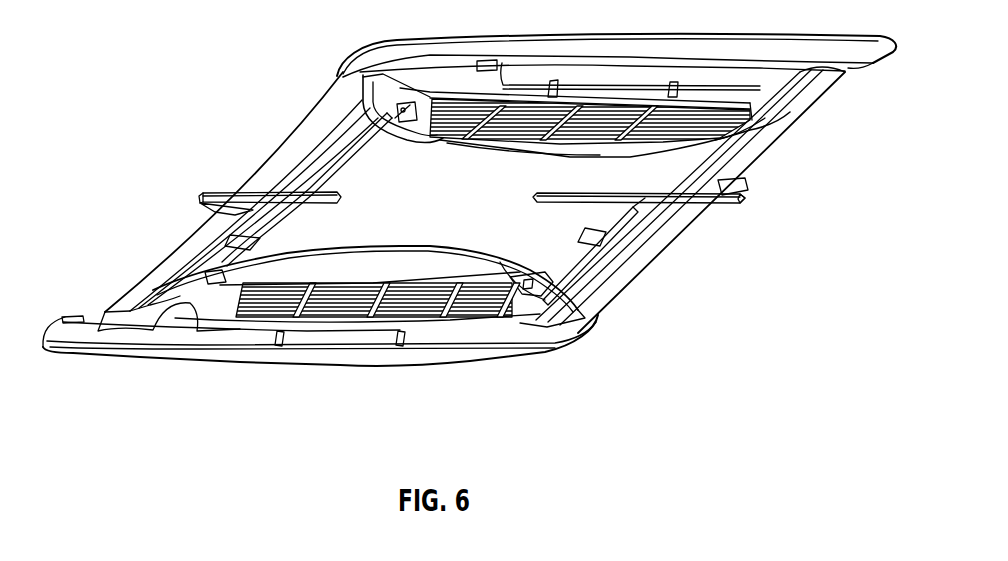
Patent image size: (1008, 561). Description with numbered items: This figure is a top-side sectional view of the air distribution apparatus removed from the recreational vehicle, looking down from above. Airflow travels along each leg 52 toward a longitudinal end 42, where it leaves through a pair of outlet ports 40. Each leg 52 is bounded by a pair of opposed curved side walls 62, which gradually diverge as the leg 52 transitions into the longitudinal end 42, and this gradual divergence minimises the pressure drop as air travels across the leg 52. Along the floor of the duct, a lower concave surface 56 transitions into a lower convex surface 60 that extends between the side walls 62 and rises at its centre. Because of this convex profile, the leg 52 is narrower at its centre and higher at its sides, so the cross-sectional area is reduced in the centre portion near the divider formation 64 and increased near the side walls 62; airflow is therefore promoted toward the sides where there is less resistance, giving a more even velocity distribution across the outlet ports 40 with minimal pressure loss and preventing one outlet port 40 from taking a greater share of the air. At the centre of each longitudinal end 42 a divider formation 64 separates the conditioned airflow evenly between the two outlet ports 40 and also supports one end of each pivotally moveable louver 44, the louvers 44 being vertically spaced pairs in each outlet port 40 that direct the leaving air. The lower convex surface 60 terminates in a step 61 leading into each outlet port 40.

The outlet port 40 is at (250, 145).
The longitudinal end 42 is at (340, 178).
The pivotally moveable louver 44 is at (327, 117).
The leg 52 is at (250, 242).
The lower concave surface 56 is at (473, 218).
The lower convex surface 60 is at (578, 250).
The step 61 is at (743, 180).
The curved side wall 62 is at (427, 143).
The divider formation 64 is at (210, 193).